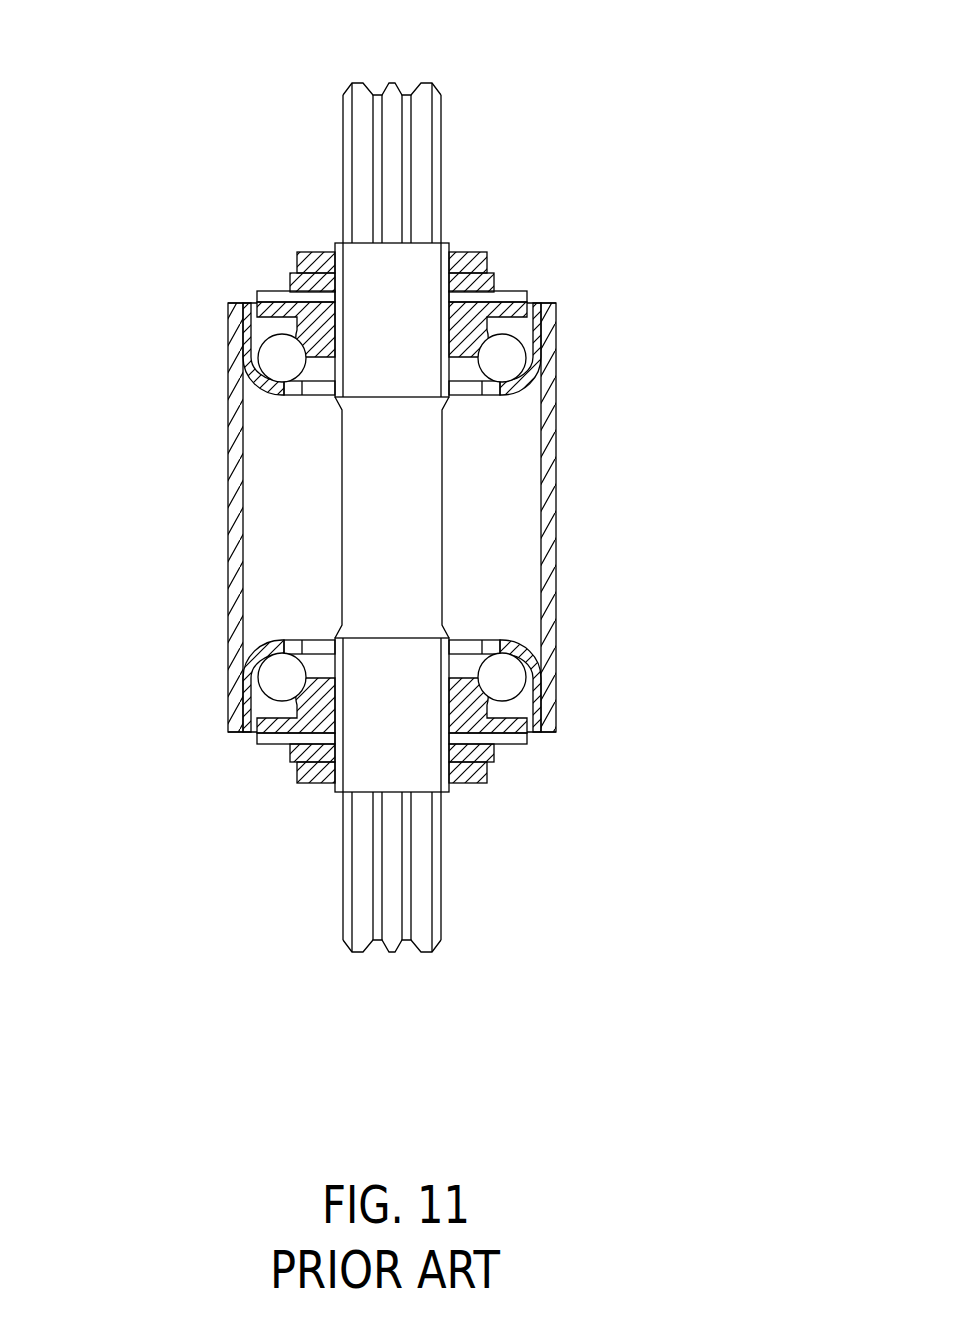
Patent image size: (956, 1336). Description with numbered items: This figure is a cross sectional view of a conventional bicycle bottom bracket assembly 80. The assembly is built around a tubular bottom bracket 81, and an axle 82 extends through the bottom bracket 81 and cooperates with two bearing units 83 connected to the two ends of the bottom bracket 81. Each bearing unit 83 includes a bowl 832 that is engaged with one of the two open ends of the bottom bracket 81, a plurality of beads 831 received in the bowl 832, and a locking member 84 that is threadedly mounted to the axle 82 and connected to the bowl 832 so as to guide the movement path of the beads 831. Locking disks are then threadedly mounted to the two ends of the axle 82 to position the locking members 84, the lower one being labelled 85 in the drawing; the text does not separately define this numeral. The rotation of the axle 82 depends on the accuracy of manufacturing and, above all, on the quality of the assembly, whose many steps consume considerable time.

The bicycle bottom bracket assembly 80 is at (648, 63).
The bottom bracket 81 is at (237, 570).
The axle 82 is at (412, 518).
The bearing unit 83 is at (497, 514).
The beads 831 is at (498, 358).
The bowl 832 is at (540, 320).
The locking member 84 is at (285, 298).
The lower nut 85 is at (285, 727).